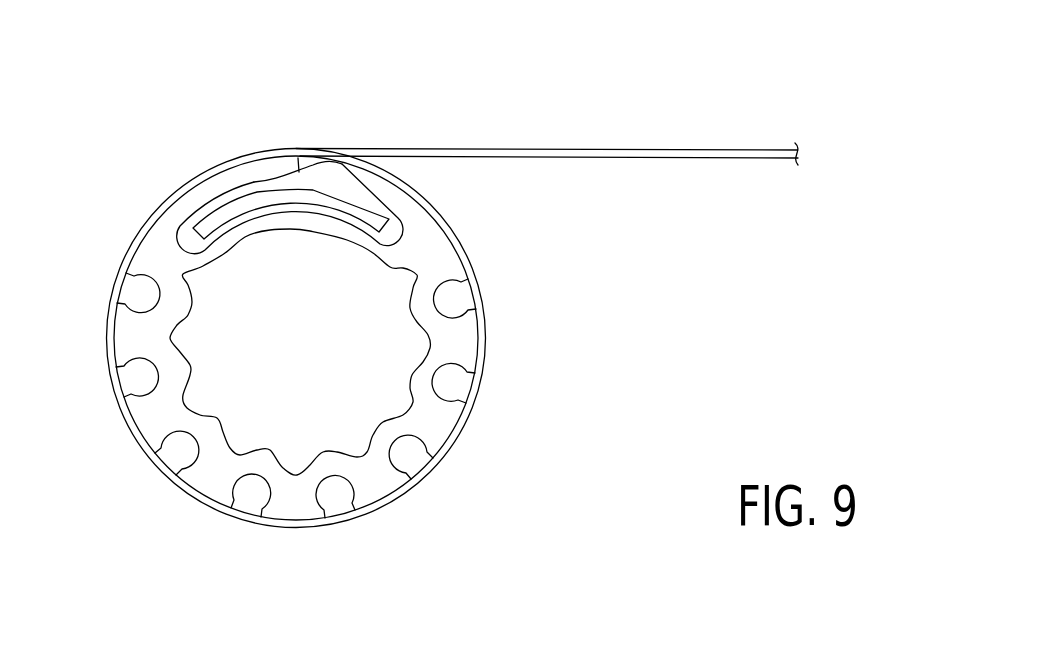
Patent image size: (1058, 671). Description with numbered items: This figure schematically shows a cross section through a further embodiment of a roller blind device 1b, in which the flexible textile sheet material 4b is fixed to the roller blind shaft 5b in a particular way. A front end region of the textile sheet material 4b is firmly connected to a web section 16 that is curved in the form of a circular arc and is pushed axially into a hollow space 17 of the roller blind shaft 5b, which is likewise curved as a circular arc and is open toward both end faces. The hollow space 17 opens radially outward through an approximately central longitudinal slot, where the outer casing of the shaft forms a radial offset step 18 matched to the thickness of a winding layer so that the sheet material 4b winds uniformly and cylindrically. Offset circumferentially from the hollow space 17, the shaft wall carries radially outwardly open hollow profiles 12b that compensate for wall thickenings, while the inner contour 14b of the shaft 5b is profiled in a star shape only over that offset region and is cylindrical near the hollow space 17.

The roller blind device 1b is at (374, 72).
The flexible textile sheet material 4b is at (622, 150).
The roller blind shaft 5b is at (430, 416).
The radially outwardly open hollow profiles 12b is at (460, 297).
The star-shaped inner contour 14b is at (187, 318).
The web section 16 is at (300, 195).
The hollow space 17 is at (400, 232).
The radial offset step 18 is at (298, 158).